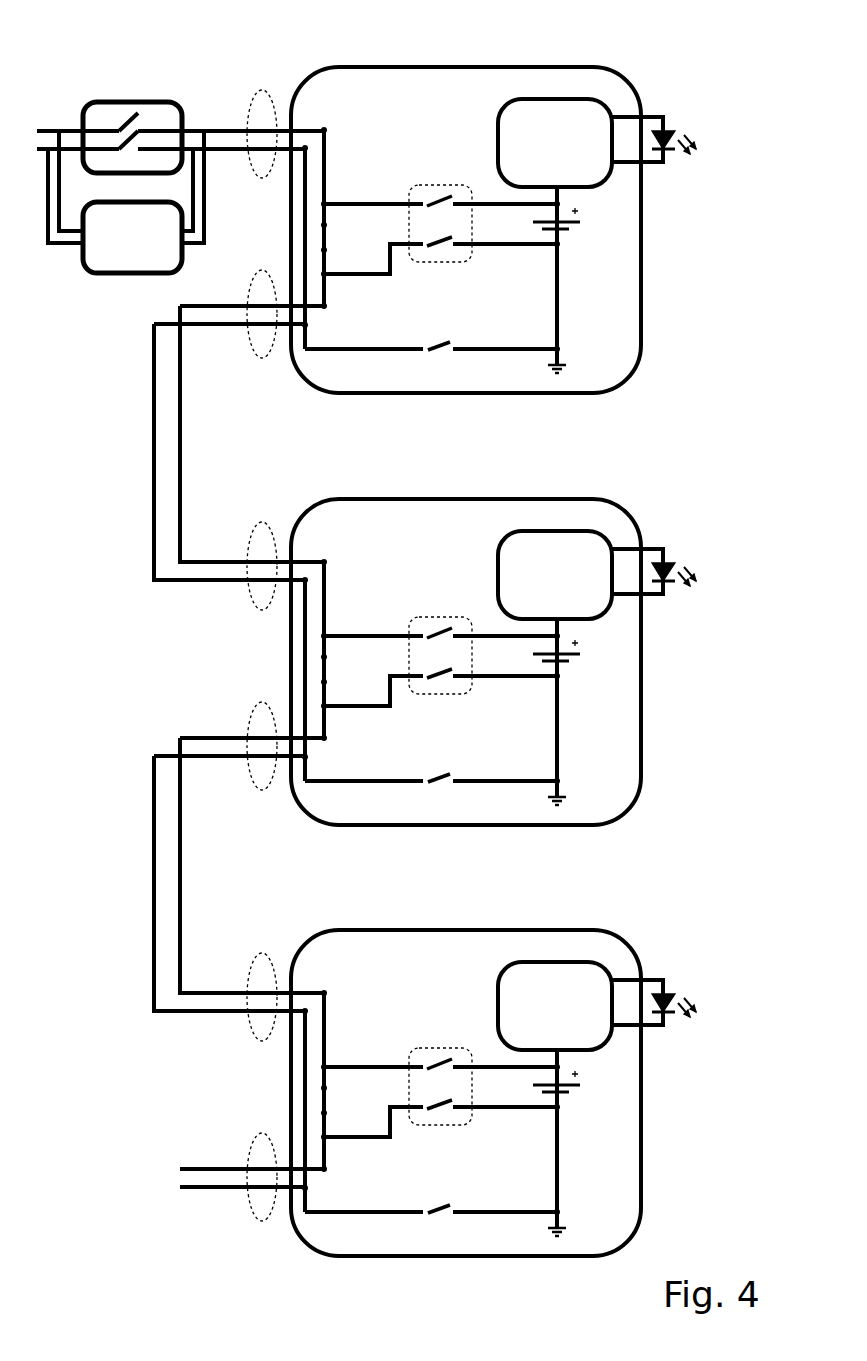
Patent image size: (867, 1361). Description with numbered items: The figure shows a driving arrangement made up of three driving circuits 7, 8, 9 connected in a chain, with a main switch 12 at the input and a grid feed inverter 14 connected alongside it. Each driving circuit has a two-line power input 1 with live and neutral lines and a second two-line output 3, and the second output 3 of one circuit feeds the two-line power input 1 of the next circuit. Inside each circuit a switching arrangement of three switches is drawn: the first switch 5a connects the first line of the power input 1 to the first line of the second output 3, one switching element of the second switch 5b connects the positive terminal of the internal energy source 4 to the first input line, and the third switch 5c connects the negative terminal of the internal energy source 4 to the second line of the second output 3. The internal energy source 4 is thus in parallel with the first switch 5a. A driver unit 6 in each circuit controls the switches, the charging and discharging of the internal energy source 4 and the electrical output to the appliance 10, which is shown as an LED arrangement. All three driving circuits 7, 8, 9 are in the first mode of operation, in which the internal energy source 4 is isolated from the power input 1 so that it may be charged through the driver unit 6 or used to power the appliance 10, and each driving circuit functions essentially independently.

The two-line power input 1 is at (262, 90).
The second two-line output 3 is at (262, 358).
The internal energy source 4 is at (580, 224).
The first switch 5a is at (322, 242).
The second switch 5b is at (472, 258).
The third switch 5c is at (440, 352).
The driver unit 6 is at (555, 574).
The driving circuit 7 is at (642, 215).
The driving circuit 8 is at (642, 663).
The driving circuit 9 is at (642, 1095).
The appliance 10 is at (665, 126).
The main switch 12 is at (122, 102).
The grid feed inverter 14 is at (112, 273).